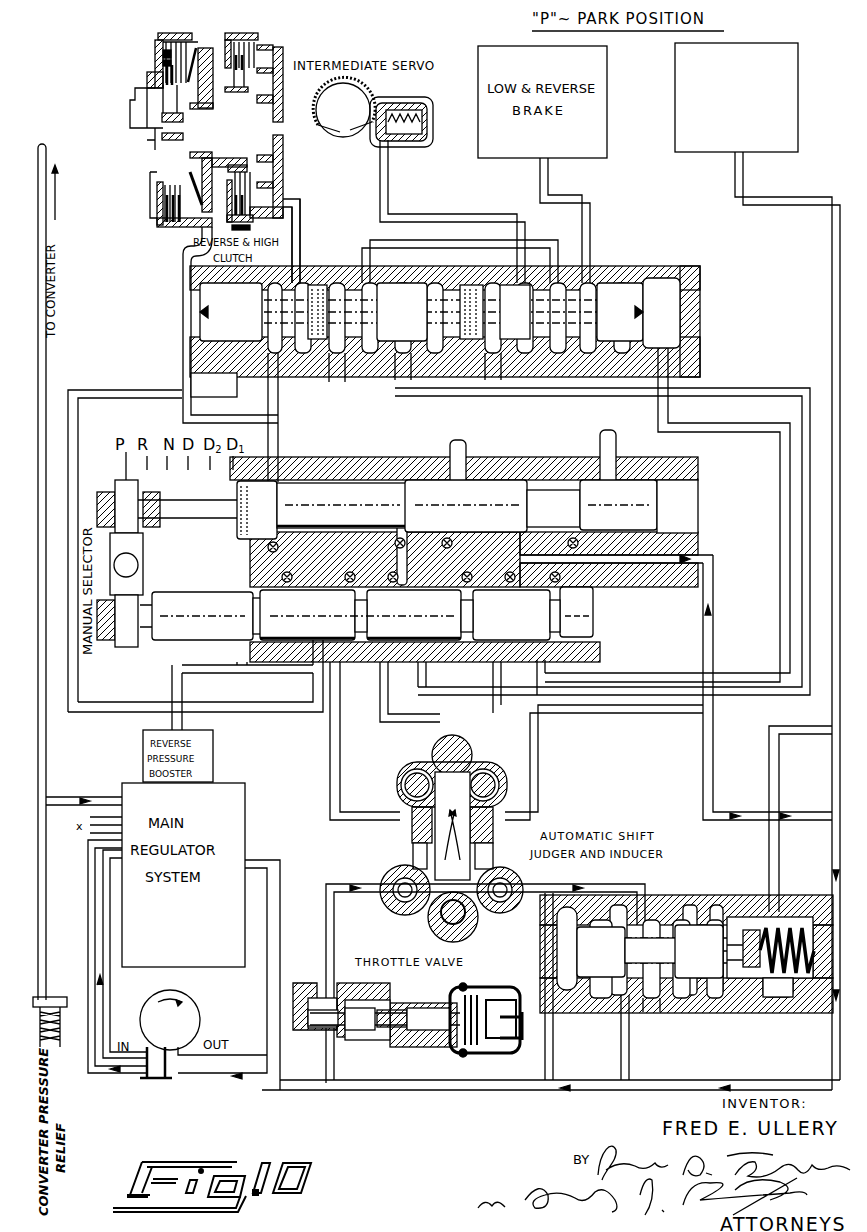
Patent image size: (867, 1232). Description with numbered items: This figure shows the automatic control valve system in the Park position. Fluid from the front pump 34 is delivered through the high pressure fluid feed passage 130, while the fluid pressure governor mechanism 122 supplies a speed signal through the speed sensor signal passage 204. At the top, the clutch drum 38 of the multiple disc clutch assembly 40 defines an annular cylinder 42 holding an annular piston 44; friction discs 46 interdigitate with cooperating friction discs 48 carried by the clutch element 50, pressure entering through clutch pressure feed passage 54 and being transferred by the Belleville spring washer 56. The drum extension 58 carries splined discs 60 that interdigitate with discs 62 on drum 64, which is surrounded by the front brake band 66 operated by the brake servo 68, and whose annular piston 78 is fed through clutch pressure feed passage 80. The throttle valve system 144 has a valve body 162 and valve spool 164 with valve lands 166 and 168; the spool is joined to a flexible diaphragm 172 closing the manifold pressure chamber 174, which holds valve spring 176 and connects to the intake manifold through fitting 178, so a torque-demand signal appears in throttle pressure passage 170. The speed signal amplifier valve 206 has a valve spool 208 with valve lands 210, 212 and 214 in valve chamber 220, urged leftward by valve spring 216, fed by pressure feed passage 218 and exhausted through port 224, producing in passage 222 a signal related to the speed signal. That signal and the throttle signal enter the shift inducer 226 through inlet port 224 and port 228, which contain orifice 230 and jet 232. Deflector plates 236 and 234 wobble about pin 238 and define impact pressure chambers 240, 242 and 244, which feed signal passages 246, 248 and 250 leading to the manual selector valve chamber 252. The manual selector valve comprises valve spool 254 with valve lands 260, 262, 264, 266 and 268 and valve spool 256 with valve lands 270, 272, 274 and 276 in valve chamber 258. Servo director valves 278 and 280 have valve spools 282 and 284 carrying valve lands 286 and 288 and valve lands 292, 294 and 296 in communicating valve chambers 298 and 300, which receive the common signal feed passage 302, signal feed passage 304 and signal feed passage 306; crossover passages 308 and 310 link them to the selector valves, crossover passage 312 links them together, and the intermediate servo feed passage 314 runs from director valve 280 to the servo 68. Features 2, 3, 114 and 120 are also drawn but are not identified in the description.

The port 2 is at (470, 345).
The port 3 is at (245, 344).
The front pump 34 is at (200, 1005).
The clutch drum 38 is at (182, 33).
The multiple disc clutch assembly 40 is at (170, 33).
The annular cylinder 42 is at (210, 109).
The annular piston 44 is at (177, 90).
The friction discs 46 is at (160, 62).
The cooperating friction discs 48 is at (160, 52).
The clutch element 50 is at (162, 116).
The clutch pressure feed passage 54 is at (183, 310).
The Belleville spring washer 56 is at (195, 55).
The extension 58 is at (218, 158).
The externally splined discs 60 is at (243, 165).
The discs 62 is at (255, 215).
The drum 64 is at (275, 47).
The front brake band 66 is at (250, 36).
The brake servo 68 is at (398, 98).
The annular piston 78 is at (283, 182).
The clutch pressure feed passage 80 is at (300, 200).
The low and reverse brake line 114 is at (578, 196).
The clutch housing plate 120 is at (230, 33).
The fluid pressure governor mechanism 122 is at (685, 117).
The high pressure fluid feed passage 130 is at (714, 732).
The throttle valve system 144 is at (408, 1032).
The valve body 162 is at (352, 985).
The valve spool 164 is at (335, 1030).
The valve land 166 is at (310, 985).
The valve land 168 is at (368, 1012).
The throttle pressure passage 170 is at (326, 895).
The flexible diaphragm 172 is at (470, 1050).
The manifold pressure chamber 174 is at (488, 1000).
The valve spring 176 is at (505, 1048).
The fitting 178 is at (525, 1022).
The speed sensor signal passage 204 is at (786, 734).
The speed signal amplifier valve 206 is at (698, 935).
The valve spool 208 is at (655, 945).
The valve land 210 is at (600, 985).
The valve land 212 is at (742, 938).
The valve land 214 is at (765, 946).
The valve spring 216 is at (790, 995).
The pressure feed passage 218 is at (618, 1040).
The valve chamber 220 is at (652, 1008).
The passage 222 is at (515, 900).
The inlet port 224 is at (494, 862).
The shift inducer 226 is at (510, 796).
The port 228 is at (385, 886).
The orifice 230 is at (495, 912).
The nozzle 232 is at (430, 928).
The deflector plate 234 is at (490, 774).
The deflector plate 236 is at (488, 743).
The pin 238 is at (435, 760).
The impact pressure chamber 240 is at (401, 787).
The impact pressure chamber 242 is at (415, 825).
The impact pressure chamber 244 is at (492, 850).
The signal passage 246 is at (332, 712).
The signal passage 248 is at (380, 662).
The signal passage 250 is at (538, 752).
The manual selector valve chamber 252 is at (290, 662).
The valve spool 254 is at (190, 605).
The valve spool 256 is at (200, 510).
The valve chamber 258 is at (372, 466).
The valve land 260 is at (255, 600).
The valve land 262 is at (300, 612).
The valve land 264 is at (440, 630).
The valve land 266 is at (580, 598).
The valve land 268 is at (585, 618).
The valve land 270 is at (260, 490).
The valve land 272 is at (335, 495).
The valve land 274 is at (480, 488).
The valve land 276 is at (620, 487).
The servo director valve 278 is at (320, 290).
The servo director valve 280 is at (618, 270).
The valve spool 282 is at (305, 262).
The valve spool 284 is at (495, 370).
The valve land 286 is at (200, 296).
The valve land 288 is at (325, 362).
The valve land 292 is at (517, 250).
The valve land 294 is at (548, 248).
The valve land 296 is at (640, 300).
The valve chamber 298 is at (400, 300).
The valve chamber 300 is at (588, 265).
The common signal feed passage 302 is at (762, 392).
The signal feed passage 304 is at (782, 528).
The signal feed passage 306 is at (80, 392).
The crossover passage 308 is at (266, 380).
The crossover passage 310 is at (390, 376).
The crossover passage 312 is at (470, 300).
The intermediate servo feed passage 314 is at (390, 182).